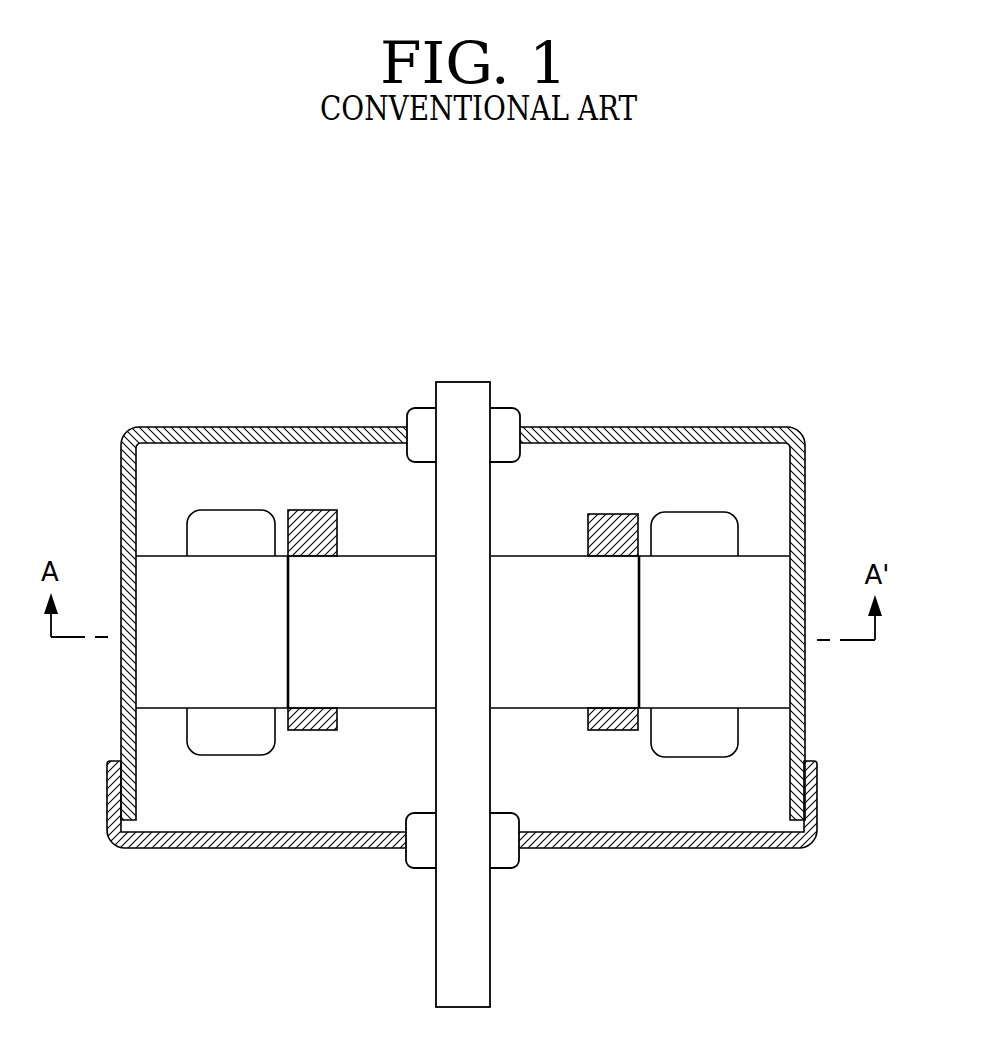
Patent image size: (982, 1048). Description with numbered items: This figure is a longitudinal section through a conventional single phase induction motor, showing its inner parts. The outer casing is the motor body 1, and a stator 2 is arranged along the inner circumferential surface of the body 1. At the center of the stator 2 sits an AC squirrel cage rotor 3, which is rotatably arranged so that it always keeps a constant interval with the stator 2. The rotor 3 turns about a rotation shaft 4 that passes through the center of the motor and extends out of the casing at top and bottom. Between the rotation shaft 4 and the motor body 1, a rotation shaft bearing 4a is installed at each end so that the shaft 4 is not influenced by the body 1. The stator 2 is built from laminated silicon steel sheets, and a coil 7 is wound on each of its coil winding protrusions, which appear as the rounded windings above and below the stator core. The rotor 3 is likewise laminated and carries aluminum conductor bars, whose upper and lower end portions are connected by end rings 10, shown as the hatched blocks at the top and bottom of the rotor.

The motor body 1 is at (800, 477).
The stator 2 is at (770, 678).
The AC squirrel cage rotor 3 is at (377, 575).
The rotation shaft 4 is at (482, 482).
The rotation shaft bearing 4a is at (507, 850).
The coil 7 is at (695, 535).
The end ring 10 is at (613, 537).